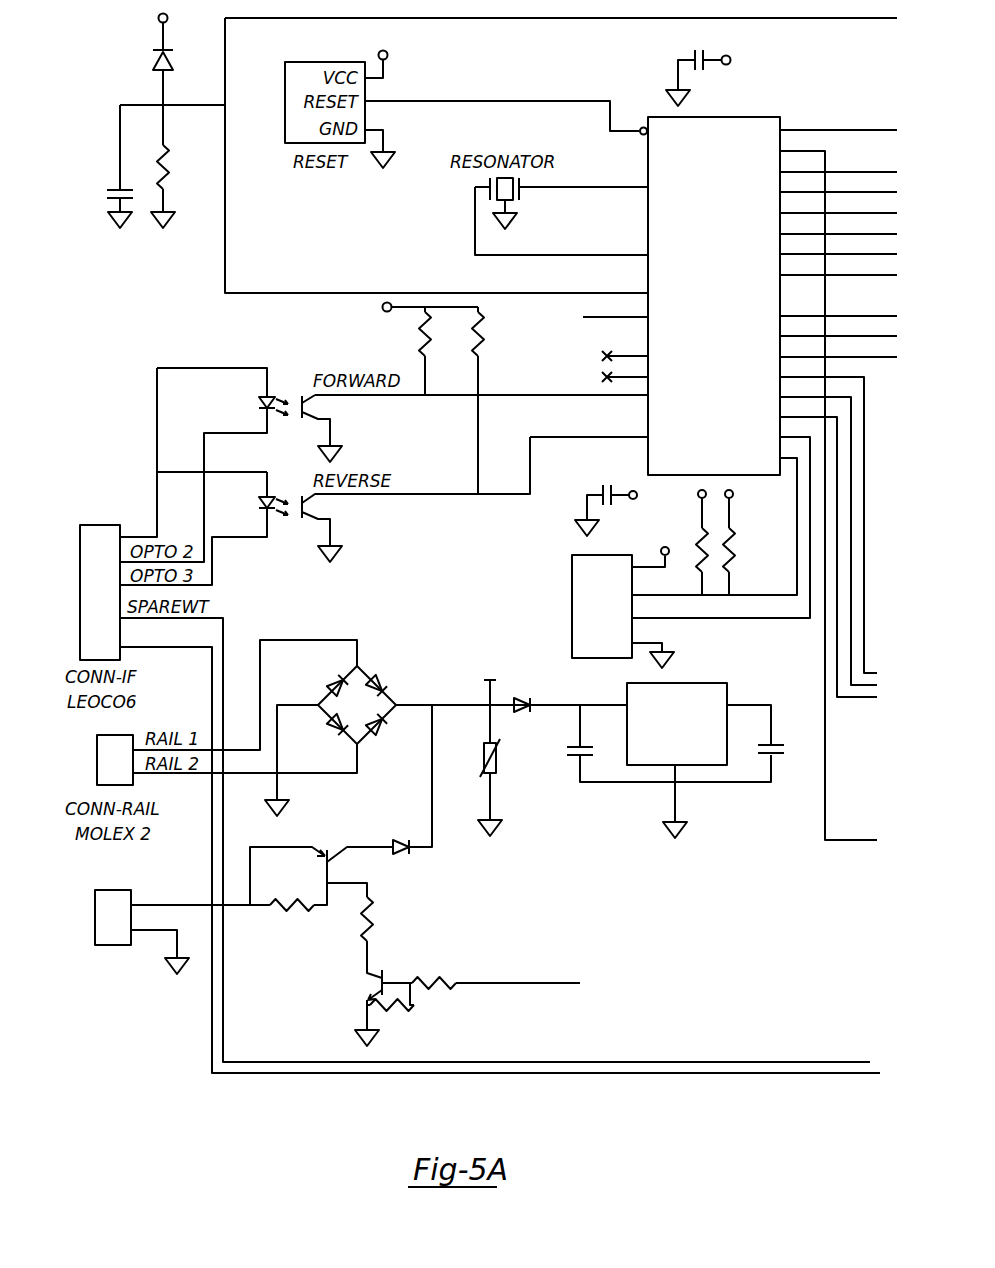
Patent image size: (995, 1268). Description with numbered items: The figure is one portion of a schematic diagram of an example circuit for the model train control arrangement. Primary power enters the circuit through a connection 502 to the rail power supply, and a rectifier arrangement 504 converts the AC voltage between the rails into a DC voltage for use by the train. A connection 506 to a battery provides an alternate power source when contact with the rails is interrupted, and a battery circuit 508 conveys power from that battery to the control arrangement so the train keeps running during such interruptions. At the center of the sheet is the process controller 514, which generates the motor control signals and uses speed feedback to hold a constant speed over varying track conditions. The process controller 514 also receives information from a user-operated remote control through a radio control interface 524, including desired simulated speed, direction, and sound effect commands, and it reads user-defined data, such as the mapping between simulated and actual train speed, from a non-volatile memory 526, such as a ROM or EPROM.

The process controller 514 is at (745, 117).
The radio control interface 524 is at (97, 525).
The connection to a rail power supply 502 is at (97, 752).
The connection to a battery 506 is at (92, 920).
The rectifier arrangement 504 is at (466, 646).
The non-volatile memory 526 is at (550, 558).
The battery circuit 508 is at (480, 930).